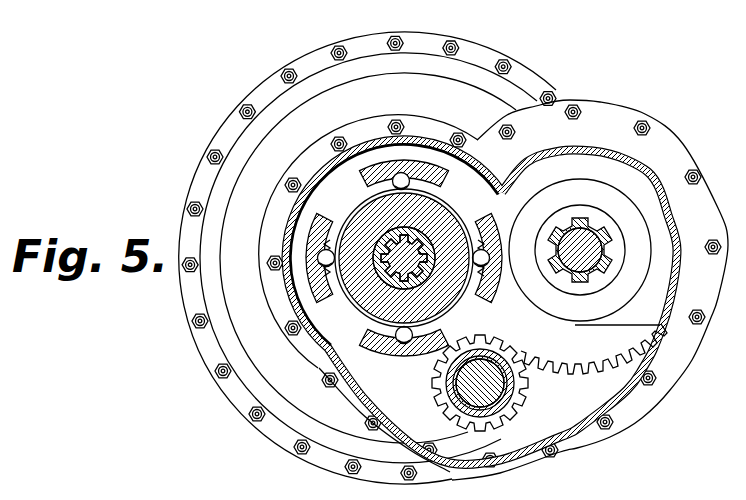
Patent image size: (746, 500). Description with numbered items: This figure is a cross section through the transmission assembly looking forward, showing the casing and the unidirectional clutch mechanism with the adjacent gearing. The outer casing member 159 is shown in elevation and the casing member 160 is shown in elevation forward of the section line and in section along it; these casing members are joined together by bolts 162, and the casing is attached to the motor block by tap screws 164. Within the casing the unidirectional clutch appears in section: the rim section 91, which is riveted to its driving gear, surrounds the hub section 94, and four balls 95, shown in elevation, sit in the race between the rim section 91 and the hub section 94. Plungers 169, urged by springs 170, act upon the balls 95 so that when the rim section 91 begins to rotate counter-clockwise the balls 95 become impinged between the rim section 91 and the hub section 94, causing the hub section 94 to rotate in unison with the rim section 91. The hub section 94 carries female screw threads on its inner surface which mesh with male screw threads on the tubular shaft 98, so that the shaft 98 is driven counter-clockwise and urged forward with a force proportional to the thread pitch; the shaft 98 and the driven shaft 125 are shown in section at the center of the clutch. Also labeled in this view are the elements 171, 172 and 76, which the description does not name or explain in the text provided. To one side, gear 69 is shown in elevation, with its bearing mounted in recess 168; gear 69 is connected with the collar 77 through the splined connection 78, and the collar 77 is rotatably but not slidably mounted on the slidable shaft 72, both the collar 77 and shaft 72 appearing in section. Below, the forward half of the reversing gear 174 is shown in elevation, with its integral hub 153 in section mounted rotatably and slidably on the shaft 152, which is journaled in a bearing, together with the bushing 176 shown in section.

The casing member 159 is at (482, 52).
The tap screws 164 is at (192, 202).
The bolts 162 is at (271, 220).
The casing member 160 is at (419, 126).
The gear 69 is at (659, 336).
The recess 168 is at (552, 188).
The hub section 94 is at (462, 183).
The balls 95 is at (421, 174).
The clutch housing wall 171 is at (481, 188).
The rim section 91 is at (304, 165).
The cage 172 is at (369, 337).
The springs 170 is at (320, 276).
The plungers 169 is at (325, 306).
The tubular shaft 98 is at (400, 288).
The driven shaft 125 is at (418, 246).
The splined connection 78 is at (527, 292).
The collar 77 is at (582, 296).
The splined hub 76 is at (548, 247).
The slidable shaft 72 is at (585, 278).
The shaft 152 is at (446, 399).
The bushing 176 is at (513, 402).
The gear 174 is at (445, 381).
The hub 153 is at (520, 368).